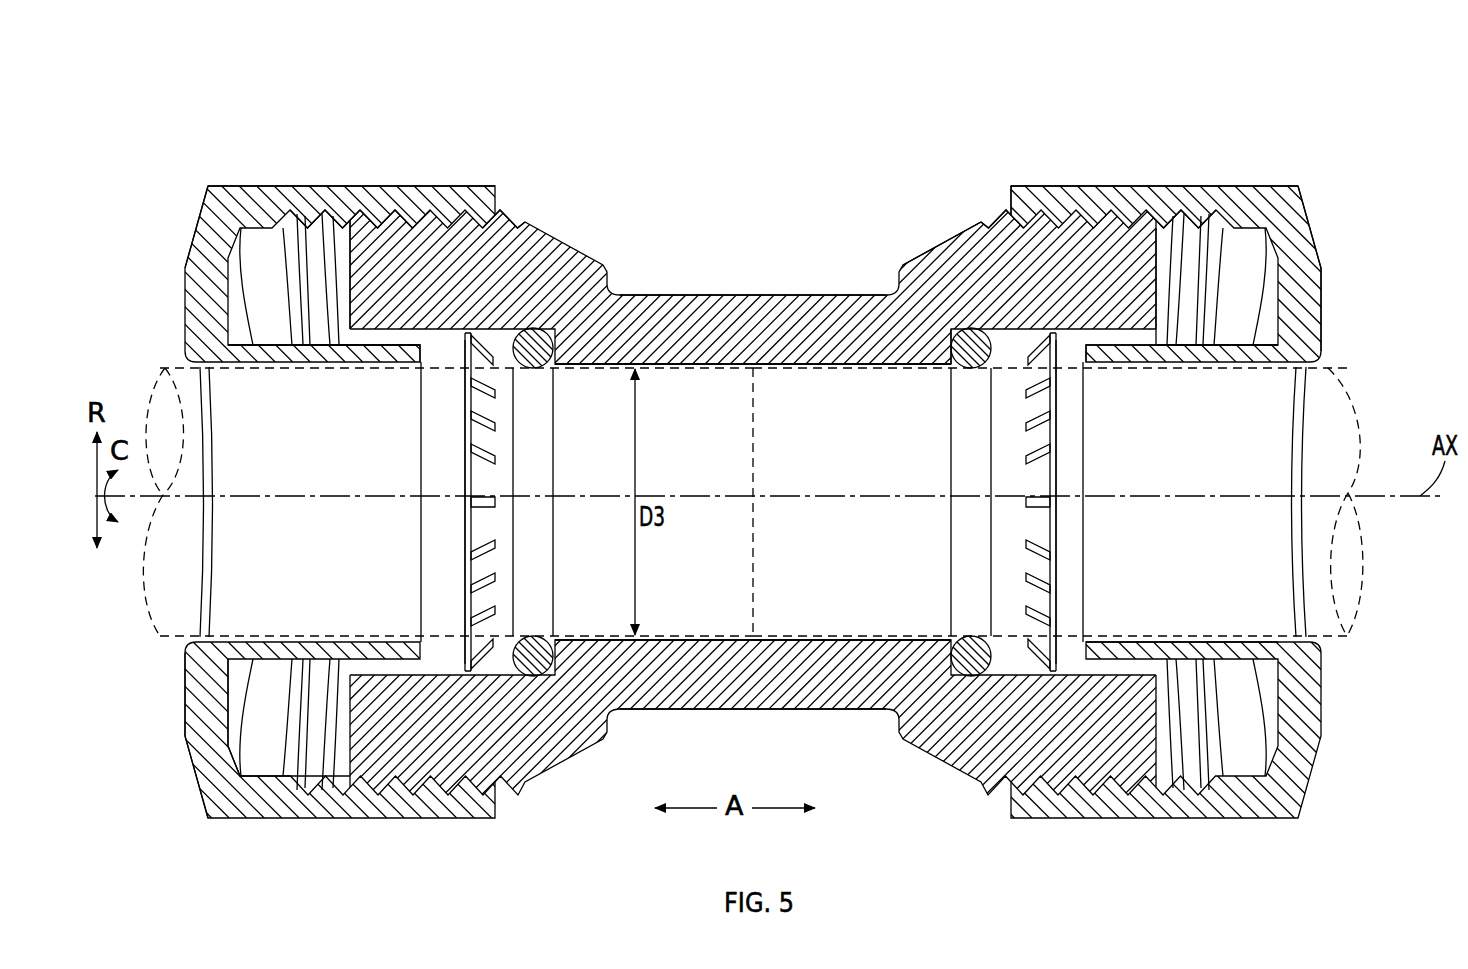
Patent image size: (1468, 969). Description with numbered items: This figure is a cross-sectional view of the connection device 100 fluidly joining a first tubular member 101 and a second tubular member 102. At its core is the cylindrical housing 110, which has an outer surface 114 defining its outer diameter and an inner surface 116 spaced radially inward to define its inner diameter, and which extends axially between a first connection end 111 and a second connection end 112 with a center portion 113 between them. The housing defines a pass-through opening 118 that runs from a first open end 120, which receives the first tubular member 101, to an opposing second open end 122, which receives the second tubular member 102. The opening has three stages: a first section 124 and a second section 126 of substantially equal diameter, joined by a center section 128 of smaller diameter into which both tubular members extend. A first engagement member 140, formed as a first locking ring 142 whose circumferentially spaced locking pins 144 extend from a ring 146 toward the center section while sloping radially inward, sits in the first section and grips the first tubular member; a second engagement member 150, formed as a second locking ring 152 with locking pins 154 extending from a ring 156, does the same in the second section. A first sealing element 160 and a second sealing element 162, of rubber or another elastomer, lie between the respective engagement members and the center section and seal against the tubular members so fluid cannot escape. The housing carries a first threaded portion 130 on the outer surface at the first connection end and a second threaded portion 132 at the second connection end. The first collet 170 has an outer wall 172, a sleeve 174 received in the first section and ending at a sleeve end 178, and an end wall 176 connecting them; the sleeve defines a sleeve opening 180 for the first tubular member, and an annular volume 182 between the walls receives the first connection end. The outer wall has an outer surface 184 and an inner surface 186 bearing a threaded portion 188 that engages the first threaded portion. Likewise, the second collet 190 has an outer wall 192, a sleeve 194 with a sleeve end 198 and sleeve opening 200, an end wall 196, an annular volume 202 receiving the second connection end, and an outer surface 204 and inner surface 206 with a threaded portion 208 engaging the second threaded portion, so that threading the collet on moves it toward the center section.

The connection device 100 is at (740, 462).
The first tubular member 101 is at (180, 362).
The second tubular member 102 is at (1328, 368).
The cylindrical housing 110 is at (752, 461).
The first connection end 111 is at (523, 248).
The second connection end 112 is at (958, 740).
The center portion 113 is at (748, 320).
The outer surface 114 is at (640, 712).
The inner surface 116 is at (680, 637).
The pass-through opening 118 is at (828, 408).
The first open end 120 is at (390, 340).
The second open end 122 is at (1150, 340).
The first section 124 is at (623, 363).
The second section 126 is at (1010, 343).
The center section 128 is at (694, 437).
The first threaded portion 130 is at (500, 211).
The second threaded portion 132 is at (992, 213).
The first engagement member 140 is at (553, 428).
The first locking ring 142 is at (506, 476).
The locking pins 144 is at (497, 633).
The ring 146 is at (500, 598).
The second engagement member 150 is at (953, 448).
The second locking ring 152 is at (1012, 458).
The locking pins 154 is at (1018, 578).
The ring 156 is at (1018, 530).
The first sealing element 160 is at (534, 330).
The second sealing element 162 is at (963, 331).
The first collet 170 is at (339, 485).
The outer wall 172 is at (398, 216).
The sleeve 174 is at (336, 363).
The end wall 176 is at (212, 726).
The sleeve end 178 is at (421, 588).
The sleeve opening 180 is at (429, 470).
The annular volume 182 is at (268, 758).
The outer surface 184 is at (460, 185).
The inner surface 186 is at (293, 235).
The threaded portion 188 is at (378, 218).
The second collet 190 is at (1154, 462).
The outer wall 192 is at (1108, 186).
The sleeve 194 is at (1156, 652).
The end wall 196 is at (1318, 278).
The sleeve end 198 is at (1088, 496).
The sleeve opening 200 is at (1081, 479).
The annular volume 202 is at (1237, 292).
The outer surface 204 is at (1048, 186).
The inner surface 206 is at (1256, 230).
The threaded portion 208 is at (1152, 215).